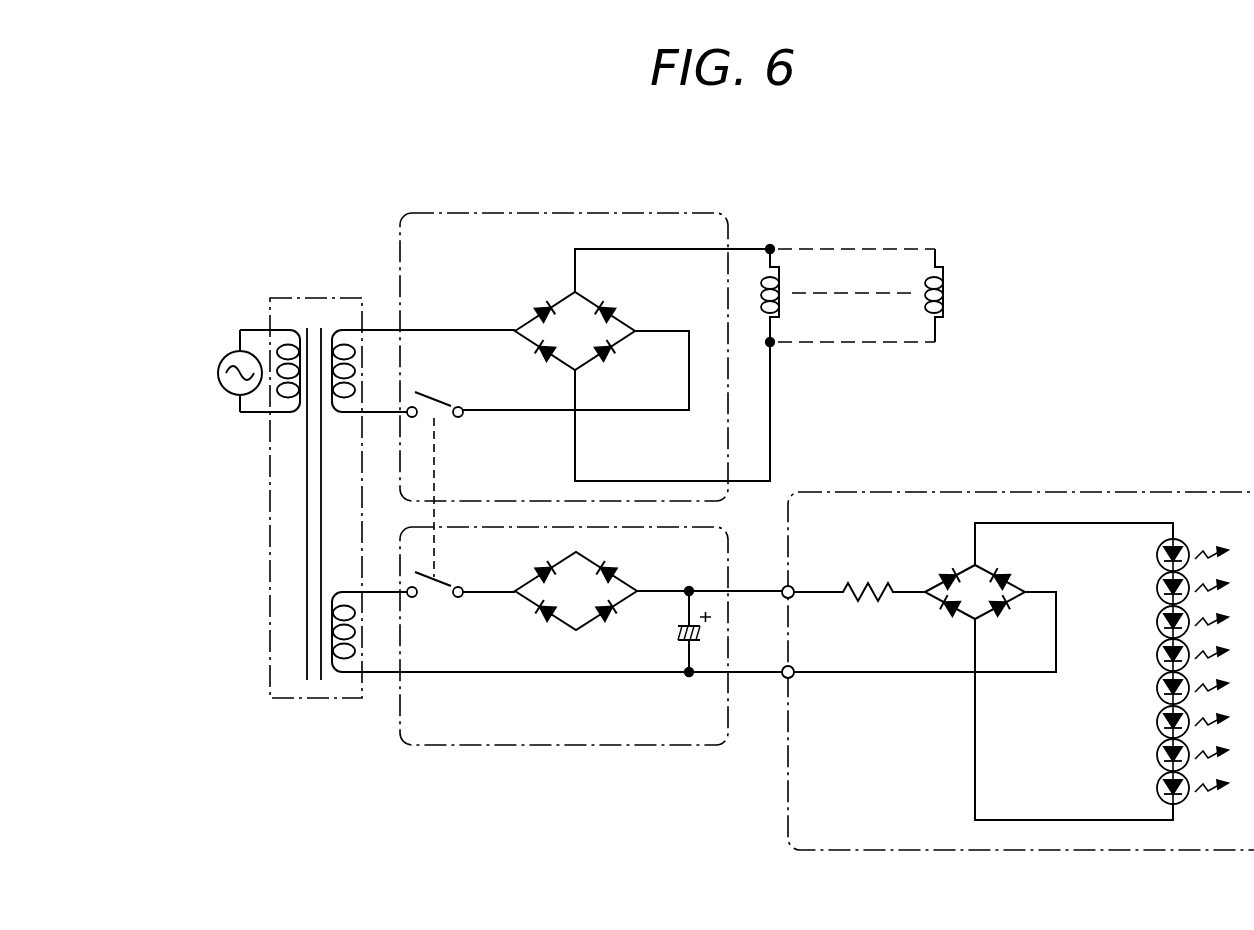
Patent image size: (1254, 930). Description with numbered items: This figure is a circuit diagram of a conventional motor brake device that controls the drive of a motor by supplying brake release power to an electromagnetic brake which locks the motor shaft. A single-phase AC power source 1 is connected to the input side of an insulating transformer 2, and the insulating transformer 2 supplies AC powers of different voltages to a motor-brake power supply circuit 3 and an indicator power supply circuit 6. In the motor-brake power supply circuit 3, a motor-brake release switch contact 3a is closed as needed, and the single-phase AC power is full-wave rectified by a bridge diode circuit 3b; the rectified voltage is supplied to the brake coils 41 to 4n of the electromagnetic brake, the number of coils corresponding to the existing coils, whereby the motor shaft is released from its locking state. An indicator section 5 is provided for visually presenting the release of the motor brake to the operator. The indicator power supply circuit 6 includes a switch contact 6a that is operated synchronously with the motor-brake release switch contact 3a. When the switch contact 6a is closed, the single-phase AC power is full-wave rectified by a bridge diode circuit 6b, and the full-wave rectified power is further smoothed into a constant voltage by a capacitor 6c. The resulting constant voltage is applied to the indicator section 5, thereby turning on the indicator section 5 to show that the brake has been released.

The AC power source 1 is at (218, 360).
The insulating transformer 2 is at (305, 297).
The motor-brake power supply circuit 3 is at (587, 359).
The motor-brake release switch contact 3a is at (463, 385).
The bridge diode circuit 3b is at (632, 324).
The brake coil 41 is at (780, 262).
The brake coil 4n is at (856, 202).
The indicator section 5 is at (1086, 492).
The indicator power supply circuit 6 is at (591, 680).
The switch contact 6a is at (446, 579).
The bridge diode circuit 6b is at (634, 584).
The capacitor 6c is at (677, 632).